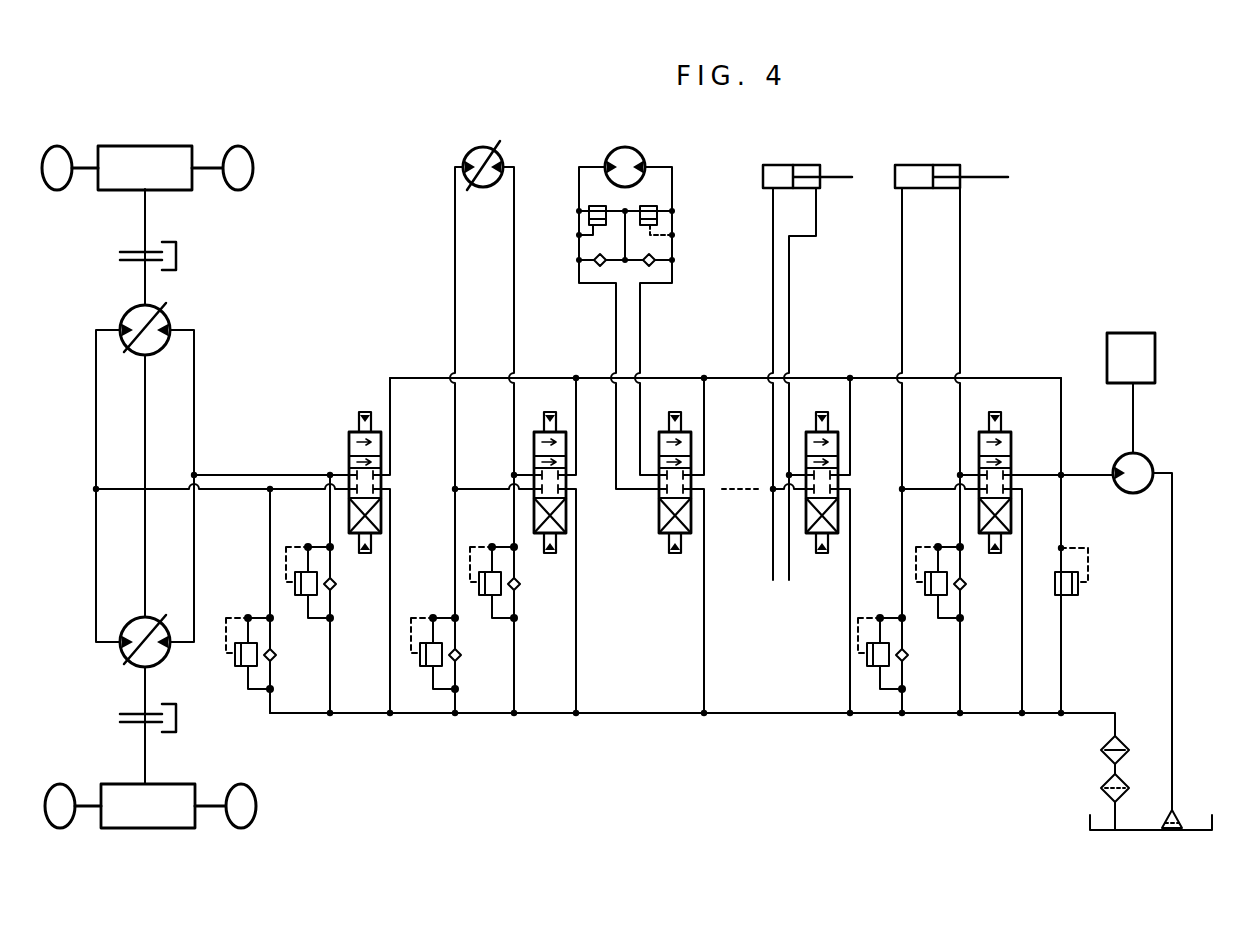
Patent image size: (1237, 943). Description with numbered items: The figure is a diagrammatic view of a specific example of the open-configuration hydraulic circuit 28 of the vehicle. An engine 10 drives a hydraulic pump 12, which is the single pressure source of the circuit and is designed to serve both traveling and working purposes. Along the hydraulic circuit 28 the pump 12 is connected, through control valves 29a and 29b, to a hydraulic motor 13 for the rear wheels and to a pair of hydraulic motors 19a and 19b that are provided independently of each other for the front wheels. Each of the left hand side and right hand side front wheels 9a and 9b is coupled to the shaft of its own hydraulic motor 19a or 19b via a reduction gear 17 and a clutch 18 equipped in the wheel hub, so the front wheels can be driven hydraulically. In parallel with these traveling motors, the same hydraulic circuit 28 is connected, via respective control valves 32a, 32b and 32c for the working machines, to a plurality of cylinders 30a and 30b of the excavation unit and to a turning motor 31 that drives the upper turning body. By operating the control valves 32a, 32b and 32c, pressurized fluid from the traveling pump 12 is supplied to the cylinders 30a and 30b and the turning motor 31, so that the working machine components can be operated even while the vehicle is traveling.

The left hand side front wheel 9a is at (248, 795).
The right hand side front wheel 9b is at (248, 158).
The engine 10 is at (1152, 333).
The hydraulic pump 12 is at (1147, 462).
The hydraulic motor for the rear wheels 13 is at (470, 152).
The reduction gear 17 is at (172, 146).
The clutch 18 is at (130, 250).
The hydraulic motor for the front wheel 19a is at (150, 620).
The hydraulic motor for the front wheel 19b is at (140, 357).
The hydraulic circuit 28 is at (1006, 372).
The control valve 29a is at (533, 437).
The control valve 29b is at (345, 435).
The cylinder 30a is at (918, 165).
The cylinder 30b is at (780, 165).
The turning motor 31 is at (608, 152).
The control valve for the working machines 32a is at (1040, 420).
The control valve for the working machines 32b is at (838, 437).
The control valve for the working machines 32c is at (692, 437).